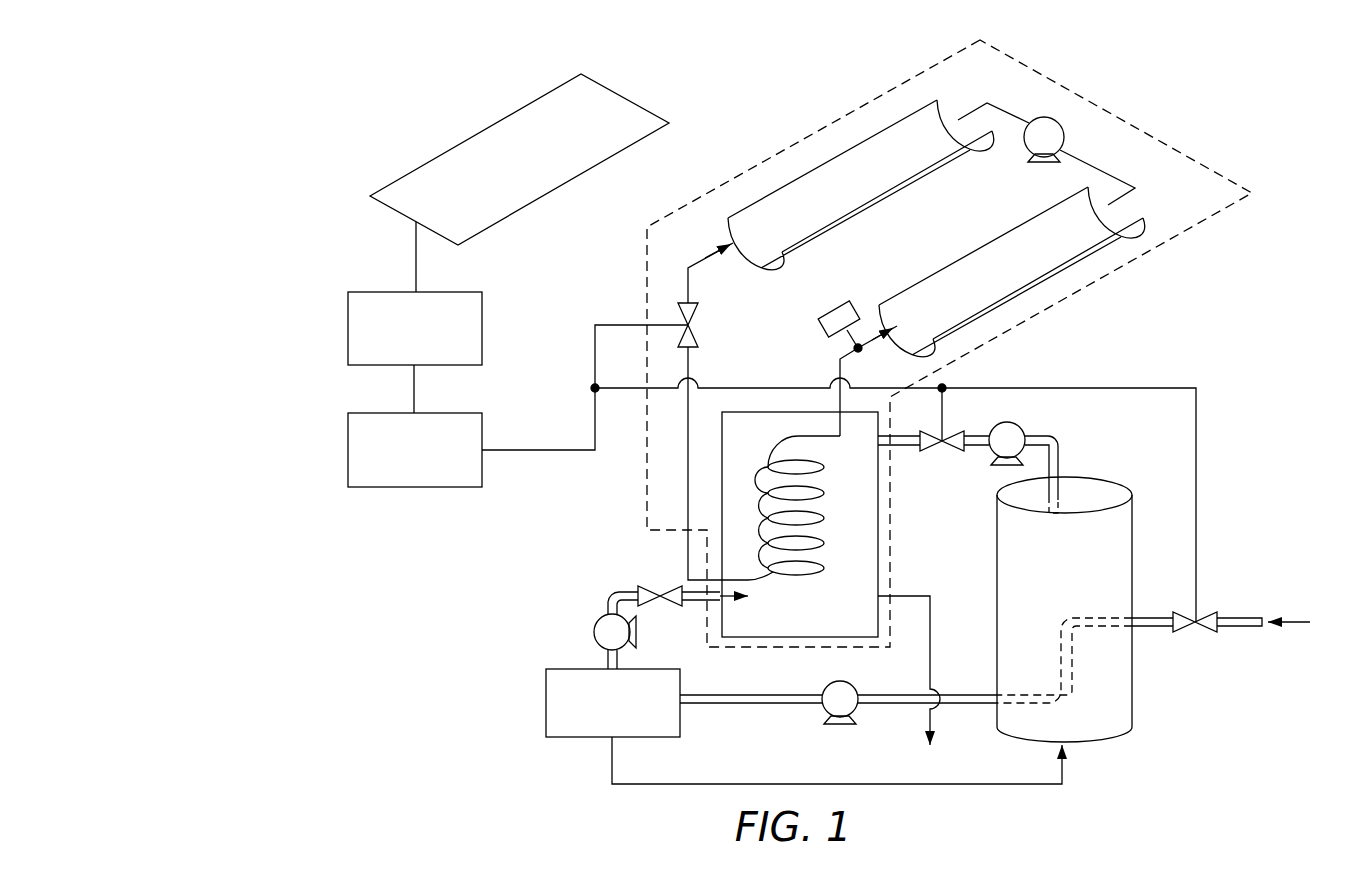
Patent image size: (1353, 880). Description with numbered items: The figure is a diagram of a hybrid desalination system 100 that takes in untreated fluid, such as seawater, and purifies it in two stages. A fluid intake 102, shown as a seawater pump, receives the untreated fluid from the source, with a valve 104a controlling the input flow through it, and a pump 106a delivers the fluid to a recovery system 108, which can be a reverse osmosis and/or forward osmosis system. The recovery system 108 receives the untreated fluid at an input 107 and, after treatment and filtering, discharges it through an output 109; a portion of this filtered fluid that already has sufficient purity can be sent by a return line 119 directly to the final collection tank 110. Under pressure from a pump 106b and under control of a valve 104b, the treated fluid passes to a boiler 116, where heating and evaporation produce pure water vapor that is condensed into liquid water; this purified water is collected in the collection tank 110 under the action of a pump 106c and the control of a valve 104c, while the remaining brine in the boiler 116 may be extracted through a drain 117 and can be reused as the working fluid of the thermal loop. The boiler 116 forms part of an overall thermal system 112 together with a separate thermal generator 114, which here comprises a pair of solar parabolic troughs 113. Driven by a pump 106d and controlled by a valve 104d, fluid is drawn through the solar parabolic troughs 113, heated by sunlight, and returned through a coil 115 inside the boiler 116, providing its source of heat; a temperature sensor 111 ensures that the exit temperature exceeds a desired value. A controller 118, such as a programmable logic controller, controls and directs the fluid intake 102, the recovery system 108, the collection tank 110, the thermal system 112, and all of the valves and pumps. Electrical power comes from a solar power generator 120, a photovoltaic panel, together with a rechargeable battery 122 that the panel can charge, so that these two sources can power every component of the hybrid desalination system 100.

The hybrid desalination system 100 is at (318, 101).
The fluid intake 102 is at (1238, 630).
The valve 104a is at (1198, 633).
The valve 104b is at (658, 585).
The valve 104c is at (942, 451).
The valve 104d is at (693, 327).
The pump 106a is at (840, 725).
The pump 106b is at (594, 618).
The pump 106c is at (1023, 425).
The pump 106d is at (1045, 117).
The input 107 is at (682, 692).
The recovery system 108 is at (546, 700).
The output 109 is at (606, 668).
The collection tank 110 is at (1132, 577).
The temperature sensor 111 is at (820, 320).
The thermal system 112 is at (815, 135).
The solar parabolic troughs 113 is at (1072, 195).
The thermal generator 114 is at (977, 215).
The coil 115 is at (797, 567).
The boiler 116 is at (782, 410).
The drain 117 is at (878, 596).
The controller 118 is at (348, 447).
The return line 119 is at (1002, 786).
The solar power generator 120 is at (478, 130).
The battery 122 is at (348, 327).